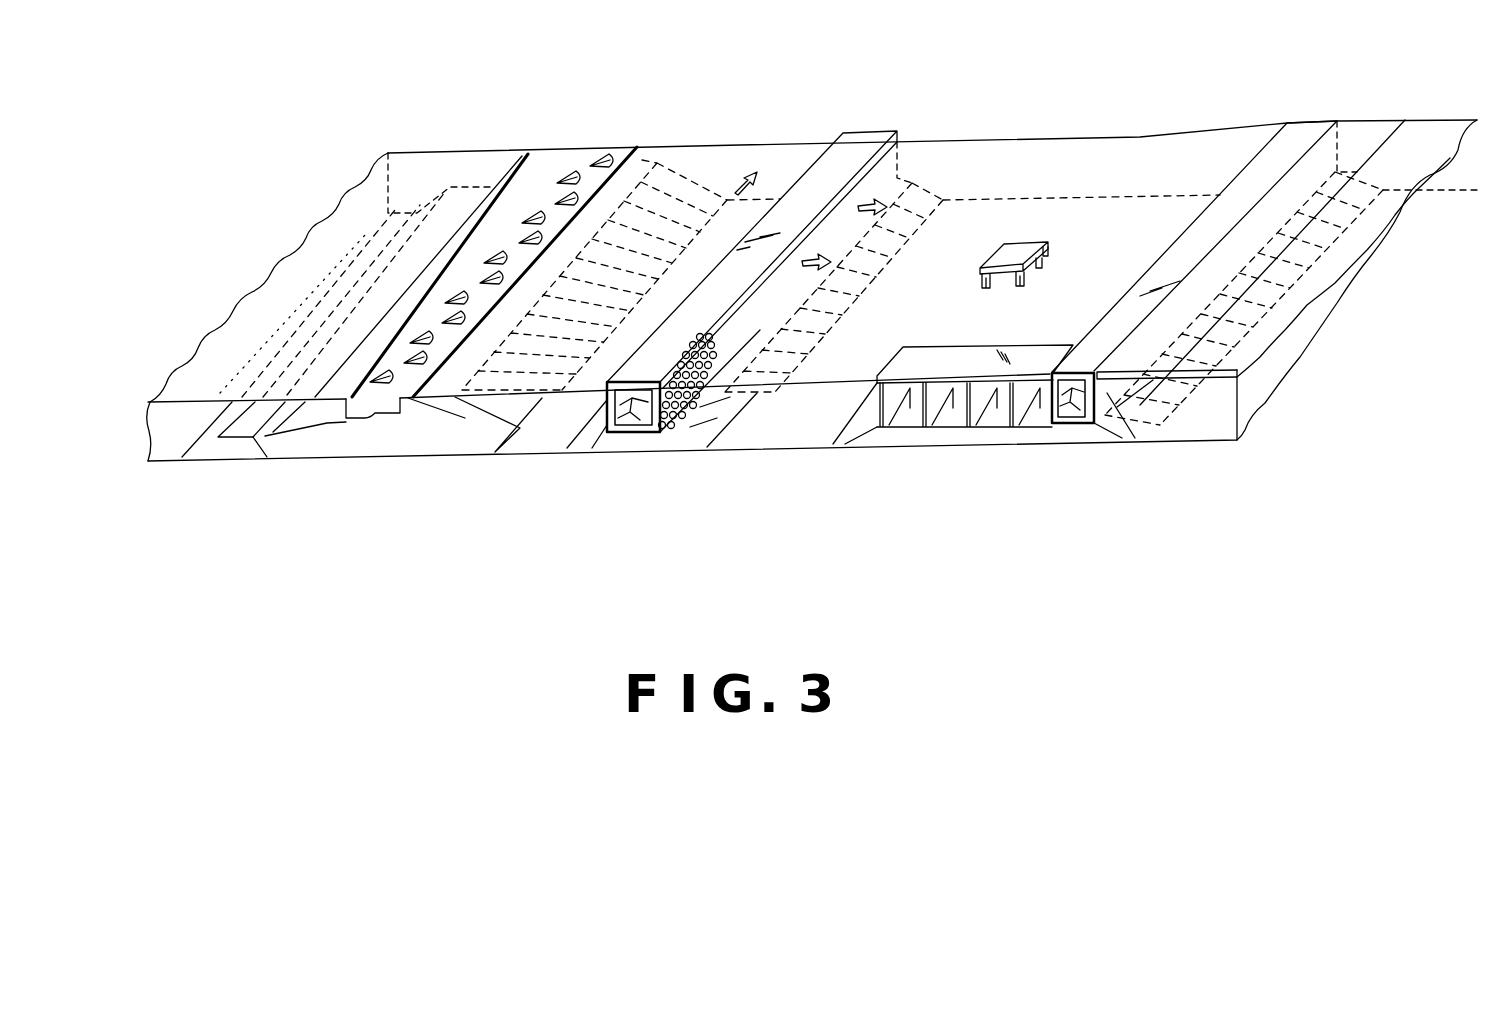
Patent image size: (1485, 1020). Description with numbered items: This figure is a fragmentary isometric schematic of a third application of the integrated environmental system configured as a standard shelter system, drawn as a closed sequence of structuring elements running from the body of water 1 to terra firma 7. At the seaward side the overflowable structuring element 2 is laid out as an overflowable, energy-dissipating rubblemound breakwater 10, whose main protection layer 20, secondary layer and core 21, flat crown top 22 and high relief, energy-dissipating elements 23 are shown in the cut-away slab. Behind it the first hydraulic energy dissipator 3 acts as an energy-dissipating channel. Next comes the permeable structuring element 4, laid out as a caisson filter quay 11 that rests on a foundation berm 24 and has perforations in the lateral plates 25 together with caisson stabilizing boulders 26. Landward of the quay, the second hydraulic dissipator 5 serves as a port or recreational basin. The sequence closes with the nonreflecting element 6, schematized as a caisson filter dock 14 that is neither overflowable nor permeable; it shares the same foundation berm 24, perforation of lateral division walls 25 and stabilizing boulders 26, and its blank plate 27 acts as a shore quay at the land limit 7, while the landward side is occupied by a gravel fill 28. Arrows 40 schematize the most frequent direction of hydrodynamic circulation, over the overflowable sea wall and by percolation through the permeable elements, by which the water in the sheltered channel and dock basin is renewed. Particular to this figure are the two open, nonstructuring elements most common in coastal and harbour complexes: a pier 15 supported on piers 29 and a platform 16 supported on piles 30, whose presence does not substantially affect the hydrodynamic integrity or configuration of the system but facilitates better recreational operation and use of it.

The body of water 1 is at (480, 158).
The overflowable structuring element 2 is at (600, 153).
The first hydraulic energy dissipator 3 is at (735, 155).
The permeable structuring element 4 is at (855, 152).
The second hydraulic dissipator 5 is at (1070, 147).
The nonreflecting element 6 is at (1300, 145).
The terra firma 7 is at (1440, 140).
The overflowable, energy-dissipating rubblemound breakwater 10 is at (318, 345).
The caisson filter quay 11 is at (697, 320).
The caisson filter dock 14 is at (1193, 240).
The pier 15 is at (962, 358).
The platform 16 is at (1013, 250).
The main protection layer 20 is at (278, 437).
The secondary layer and core 21 is at (338, 433).
The flat crown top 22 is at (388, 417).
The high relief energy-dissipating elements 23 is at (443, 322).
The foundation berm 24 is at (597, 447).
The perforations in the lateral plates 25 is at (620, 435).
The caisson stabilizing boulders 26 is at (660, 435).
The blank plate 27 is at (1110, 428).
The gravel fill 28 is at (1150, 425).
The piers 29 is at (958, 425).
The piles 30 is at (1021, 287).
The arrows 40 is at (790, 183).